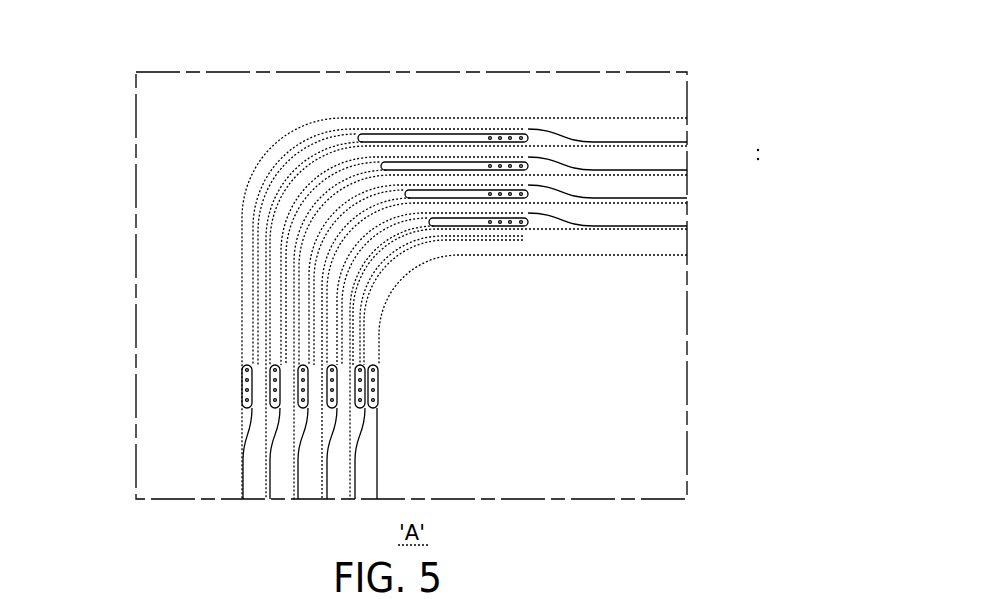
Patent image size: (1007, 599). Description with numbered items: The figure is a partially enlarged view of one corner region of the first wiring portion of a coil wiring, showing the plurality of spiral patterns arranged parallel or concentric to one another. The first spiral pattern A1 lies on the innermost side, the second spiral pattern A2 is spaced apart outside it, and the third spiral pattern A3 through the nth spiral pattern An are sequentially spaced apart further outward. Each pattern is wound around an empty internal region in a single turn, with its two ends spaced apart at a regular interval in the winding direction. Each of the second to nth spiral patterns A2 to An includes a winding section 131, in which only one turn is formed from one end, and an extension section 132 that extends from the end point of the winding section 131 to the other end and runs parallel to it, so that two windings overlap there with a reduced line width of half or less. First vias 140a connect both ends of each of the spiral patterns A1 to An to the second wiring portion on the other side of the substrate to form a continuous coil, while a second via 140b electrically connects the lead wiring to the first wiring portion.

The winding section 131 is at (642, 157).
The extension section 132 is at (447, 150).
The first via 140a is at (245, 402).
The second via 140b is at (375, 370).
The first spiral pattern A1 is at (683, 242).
The second spiral pattern A2 is at (683, 213).
The third spiral pattern A3 is at (683, 185).
The nth spiral pattern An is at (683, 128).